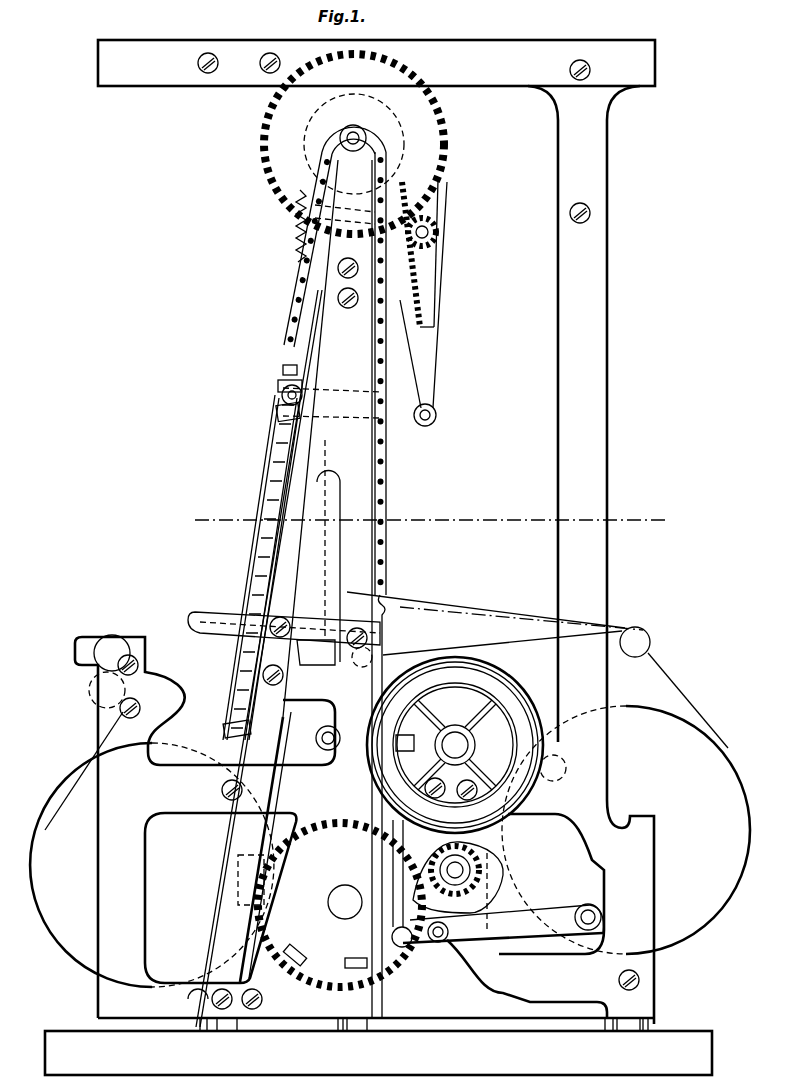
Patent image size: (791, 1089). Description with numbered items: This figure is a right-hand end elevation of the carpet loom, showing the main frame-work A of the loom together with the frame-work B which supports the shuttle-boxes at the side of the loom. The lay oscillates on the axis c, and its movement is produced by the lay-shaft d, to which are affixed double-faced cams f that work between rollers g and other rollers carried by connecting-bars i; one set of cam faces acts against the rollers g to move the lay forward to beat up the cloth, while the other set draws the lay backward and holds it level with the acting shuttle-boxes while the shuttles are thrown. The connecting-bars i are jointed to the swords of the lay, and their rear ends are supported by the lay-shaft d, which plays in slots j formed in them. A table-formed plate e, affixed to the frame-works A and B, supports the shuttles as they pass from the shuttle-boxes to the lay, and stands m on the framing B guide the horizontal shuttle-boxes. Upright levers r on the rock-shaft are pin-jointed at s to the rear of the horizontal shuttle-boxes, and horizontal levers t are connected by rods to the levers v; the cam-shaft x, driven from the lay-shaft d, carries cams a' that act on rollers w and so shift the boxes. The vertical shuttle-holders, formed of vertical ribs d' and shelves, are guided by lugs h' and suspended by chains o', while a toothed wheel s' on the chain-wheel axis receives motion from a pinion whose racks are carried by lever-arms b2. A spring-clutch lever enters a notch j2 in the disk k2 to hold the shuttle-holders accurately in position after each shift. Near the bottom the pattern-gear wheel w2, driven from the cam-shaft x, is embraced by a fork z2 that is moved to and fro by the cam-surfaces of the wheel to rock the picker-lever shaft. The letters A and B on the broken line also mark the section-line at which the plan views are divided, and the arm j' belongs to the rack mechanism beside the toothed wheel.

The main frame-work A is at (378, 557).
The frame-work B is at (432, 540).
The toothed wheel s' is at (354, 144).
The chains o' is at (342, 571).
The connecting-bars i is at (306, 589).
The disk k2 is at (440, 228).
The notch j2 is at (431, 253).
The rack arm j' is at (423, 295).
The lever-arms b2 is at (414, 413).
The rollers g is at (293, 291).
The axis c is at (308, 387).
The lugs h' is at (261, 570).
The vertical ribs d' is at (259, 658).
The stands m is at (458, 670).
The upright levers r is at (349, 802).
The pin-joint s is at (362, 657).
The lay-shaft d is at (455, 745).
The double-faced cams f is at (487, 719).
The slots j is at (493, 753).
The horizontal levers t is at (400, 744).
The table-formed plate e is at (483, 769).
The rollers w is at (390, 846).
The pattern-gear wheel w2 is at (340, 905).
The fork z2 is at (307, 911).
The cam-shaft x is at (440, 875).
The cams a' is at (458, 878).
The levers v is at (497, 925).